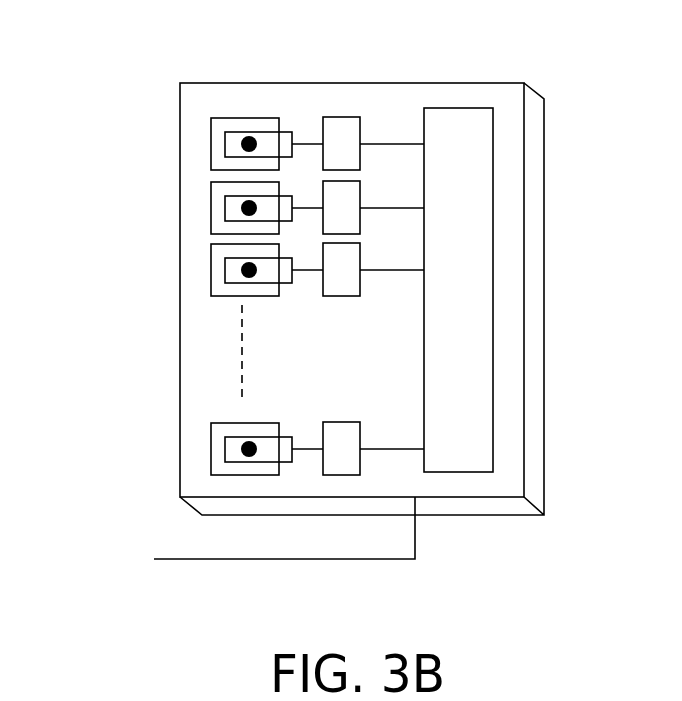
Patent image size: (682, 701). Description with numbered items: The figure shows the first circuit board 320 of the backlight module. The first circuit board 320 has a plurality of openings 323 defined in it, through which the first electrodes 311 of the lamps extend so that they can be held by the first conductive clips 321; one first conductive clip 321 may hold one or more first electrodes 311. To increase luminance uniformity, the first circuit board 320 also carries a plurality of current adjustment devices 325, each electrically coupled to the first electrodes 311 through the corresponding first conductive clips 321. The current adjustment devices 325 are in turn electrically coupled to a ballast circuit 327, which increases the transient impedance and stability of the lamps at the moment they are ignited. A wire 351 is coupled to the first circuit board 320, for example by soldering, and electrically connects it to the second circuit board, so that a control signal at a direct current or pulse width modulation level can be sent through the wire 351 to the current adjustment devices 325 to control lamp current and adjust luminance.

The first electrode 311 is at (240, 144).
The first circuit board 320 is at (326, 325).
The first conductive clip 321 is at (290, 132).
The opening 323 is at (228, 118).
The current adjustment device 325 is at (343, 117).
The ballast circuit 327 is at (457, 108).
The wire 351 is at (299, 559).